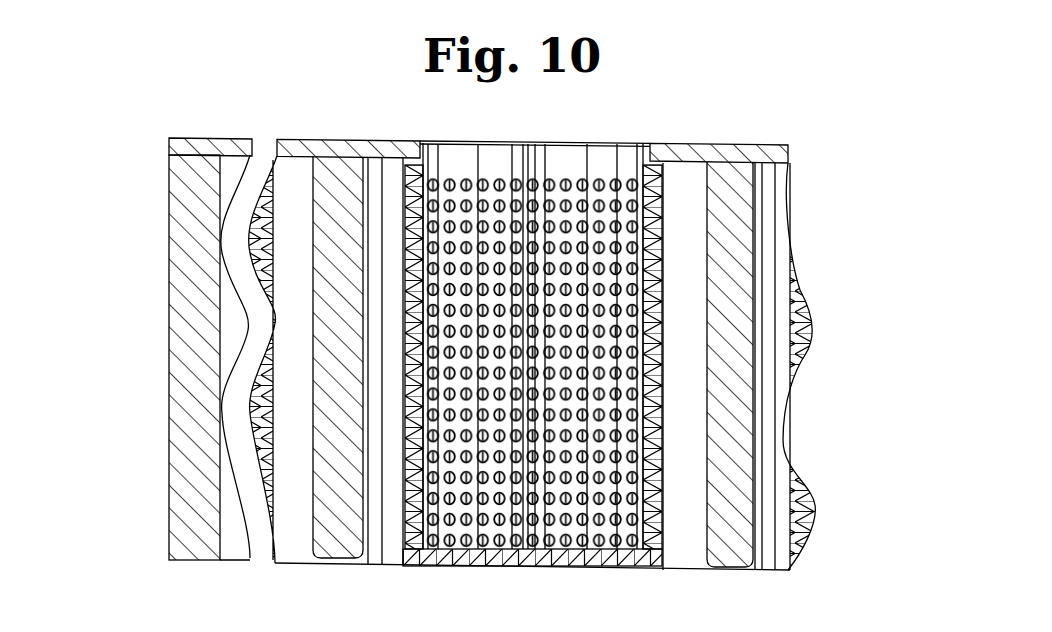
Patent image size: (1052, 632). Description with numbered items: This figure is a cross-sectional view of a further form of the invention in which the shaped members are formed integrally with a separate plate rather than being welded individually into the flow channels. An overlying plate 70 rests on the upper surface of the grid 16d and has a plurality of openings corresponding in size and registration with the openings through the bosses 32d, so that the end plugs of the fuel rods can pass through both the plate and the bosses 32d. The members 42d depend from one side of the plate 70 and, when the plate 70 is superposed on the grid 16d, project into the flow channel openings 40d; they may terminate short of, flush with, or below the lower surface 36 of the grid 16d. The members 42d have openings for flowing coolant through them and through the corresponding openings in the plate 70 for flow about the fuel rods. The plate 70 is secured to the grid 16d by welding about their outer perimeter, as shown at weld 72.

The plate 70 is at (198, 137).
The weld 72 is at (167, 150).
The bosses 32d is at (380, 177).
The members 42d is at (663, 256).
The grid 16d is at (768, 330).
The flow channel openings 40d is at (705, 412).
The lower surface 36 is at (327, 565).